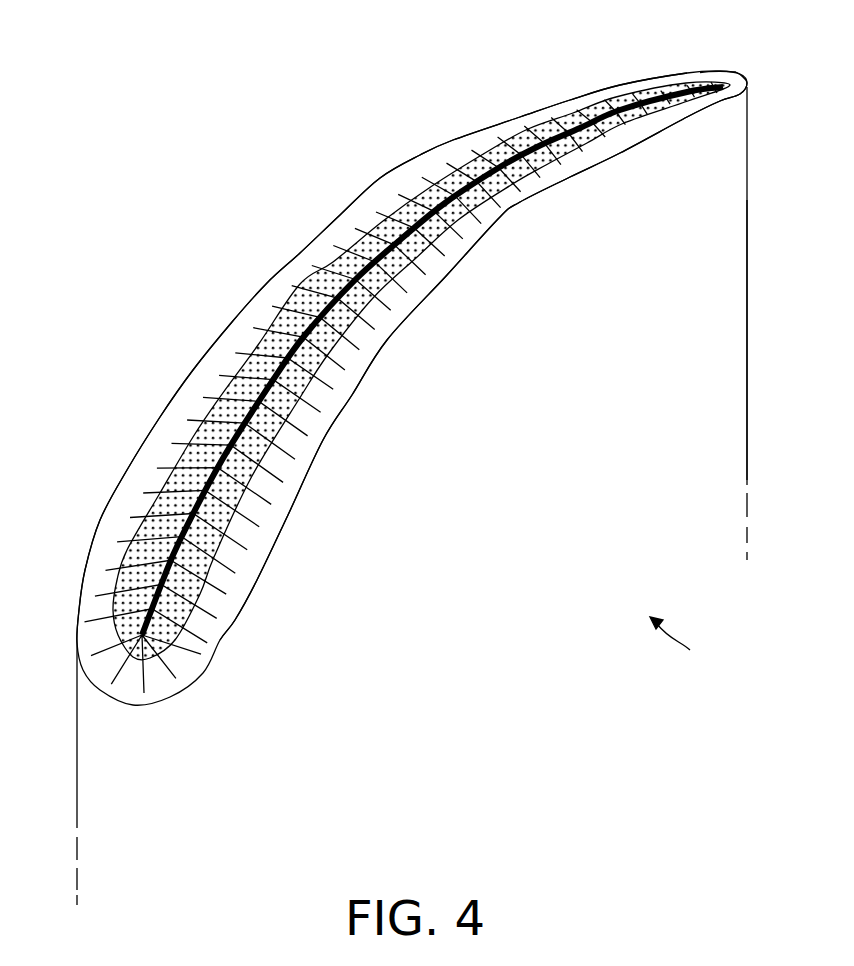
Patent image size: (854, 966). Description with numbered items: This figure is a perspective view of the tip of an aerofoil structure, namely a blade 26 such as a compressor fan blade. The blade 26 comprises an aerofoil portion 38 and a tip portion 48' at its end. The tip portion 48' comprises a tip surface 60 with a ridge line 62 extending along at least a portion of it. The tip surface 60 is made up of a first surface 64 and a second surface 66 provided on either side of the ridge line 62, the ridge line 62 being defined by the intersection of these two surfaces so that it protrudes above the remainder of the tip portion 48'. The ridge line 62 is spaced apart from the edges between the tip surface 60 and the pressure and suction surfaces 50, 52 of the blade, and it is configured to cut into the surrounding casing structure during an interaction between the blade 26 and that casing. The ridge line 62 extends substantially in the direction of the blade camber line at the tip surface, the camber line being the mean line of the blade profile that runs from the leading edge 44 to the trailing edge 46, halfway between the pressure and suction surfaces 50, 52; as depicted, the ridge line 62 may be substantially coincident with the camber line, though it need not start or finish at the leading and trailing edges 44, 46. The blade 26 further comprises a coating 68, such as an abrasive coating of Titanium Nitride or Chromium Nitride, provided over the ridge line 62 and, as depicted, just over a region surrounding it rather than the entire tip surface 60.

The blade 26 is at (685, 643).
The aerofoil portion 38 is at (428, 629).
The leading edge 44 is at (85, 790).
The trailing edge 46 is at (748, 337).
The tip portion 48' is at (412, 388).
The pressure surface 50 is at (739, 172).
The suction surface 52 is at (701, 73).
The tip surface 60 is at (160, 433).
The ridge line 62 is at (290, 305).
The first surface 64 is at (482, 140).
The second surface 66 is at (535, 195).
The coating 68 is at (140, 527).